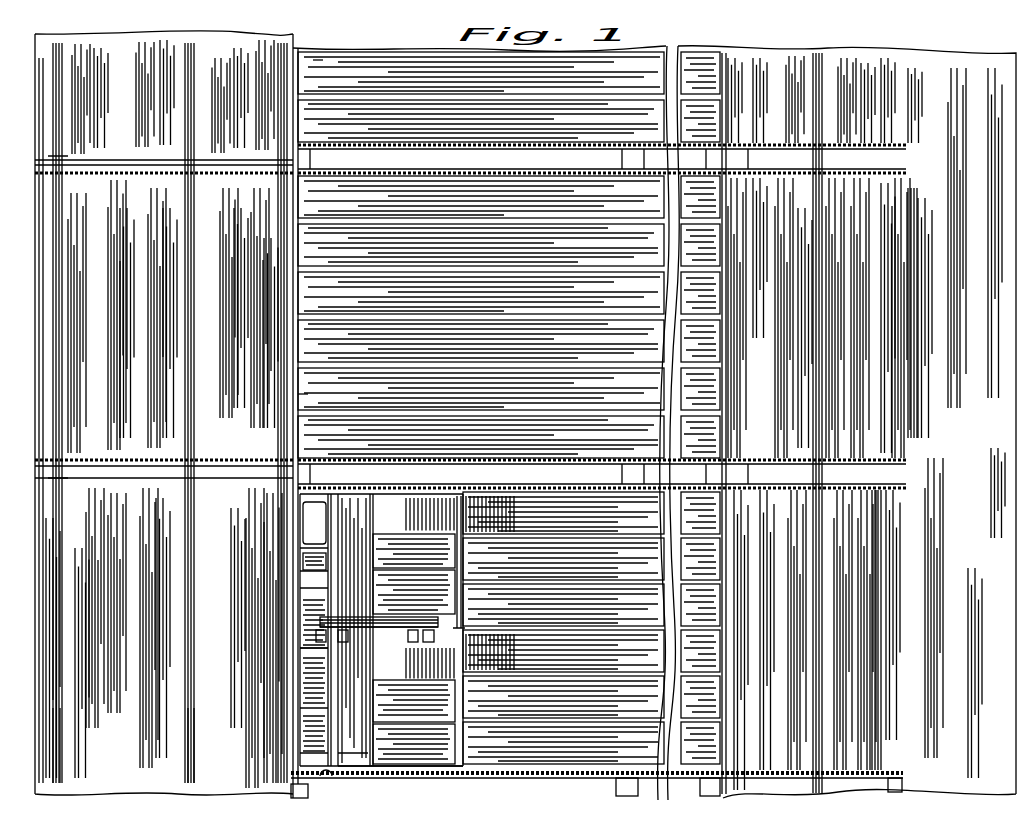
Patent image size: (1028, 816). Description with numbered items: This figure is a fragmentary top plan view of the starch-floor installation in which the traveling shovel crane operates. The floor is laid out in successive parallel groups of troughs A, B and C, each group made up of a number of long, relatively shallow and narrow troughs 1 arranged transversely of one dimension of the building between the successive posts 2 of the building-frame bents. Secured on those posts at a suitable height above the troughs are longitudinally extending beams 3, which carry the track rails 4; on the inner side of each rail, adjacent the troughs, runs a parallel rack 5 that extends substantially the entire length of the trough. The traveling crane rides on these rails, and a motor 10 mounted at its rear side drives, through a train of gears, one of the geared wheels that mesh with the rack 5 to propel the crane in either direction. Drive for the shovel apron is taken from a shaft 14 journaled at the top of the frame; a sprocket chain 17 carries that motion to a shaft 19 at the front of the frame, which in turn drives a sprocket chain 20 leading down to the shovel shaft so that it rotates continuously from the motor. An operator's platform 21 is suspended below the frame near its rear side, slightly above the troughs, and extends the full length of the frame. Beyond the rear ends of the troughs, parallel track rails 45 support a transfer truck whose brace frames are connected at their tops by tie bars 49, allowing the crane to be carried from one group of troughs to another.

The trough 1 is at (364, 46).
The post 2 is at (298, 152).
The beam 3 is at (577, 447).
The track rail 4 is at (330, 768).
The rack 5 is at (450, 467).
The motor 10 is at (293, 518).
The shaft 14 is at (293, 567).
The sprocket chain 17 is at (396, 610).
The shaft 19 is at (416, 558).
The sprocket chain 20 is at (387, 615).
The operator's platform 21 is at (353, 738).
The track rail 45 is at (180, 762).
The tie bar 49 is at (62, 156).
The group of troughs A is at (293, 650).
The group of troughs B is at (293, 390).
The group of troughs C is at (310, 52).